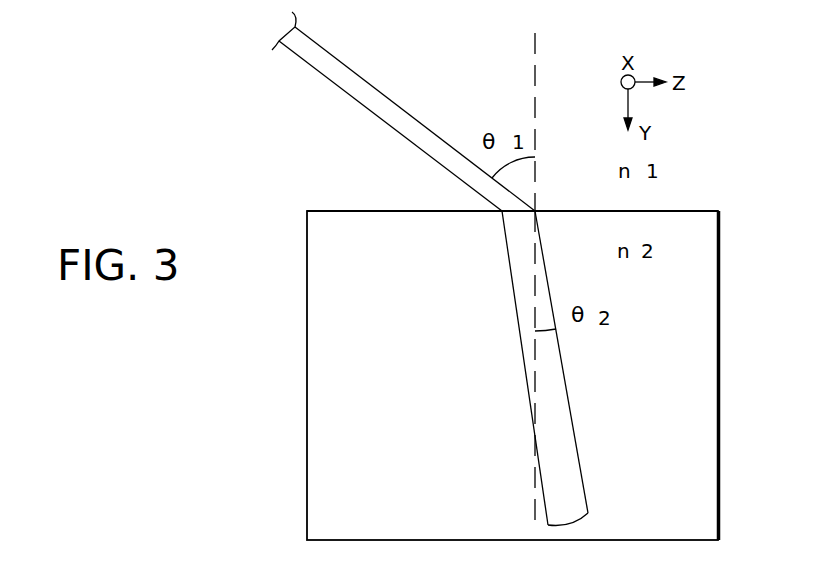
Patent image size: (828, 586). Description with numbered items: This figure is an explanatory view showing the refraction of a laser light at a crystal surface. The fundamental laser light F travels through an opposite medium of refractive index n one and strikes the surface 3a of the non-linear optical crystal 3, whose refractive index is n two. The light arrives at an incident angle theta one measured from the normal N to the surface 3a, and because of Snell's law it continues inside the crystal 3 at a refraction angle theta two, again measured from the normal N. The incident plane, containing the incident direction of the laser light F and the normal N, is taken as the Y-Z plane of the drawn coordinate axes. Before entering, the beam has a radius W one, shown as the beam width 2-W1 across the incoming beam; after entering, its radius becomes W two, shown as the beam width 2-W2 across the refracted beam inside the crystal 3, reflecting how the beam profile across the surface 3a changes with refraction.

The non-linear optical crystal 3 is at (705, 306).
The surface of the non-linear optical crystal 3a is at (678, 211).
The fundamental laser light F is at (348, 73).
The normal N is at (536, 80).
The beam diameter of the fundamental laser light before entering 2-W1 is at (440, 62).
The beam diameter of the fundamental laser light after entering 2-W2 is at (630, 480).